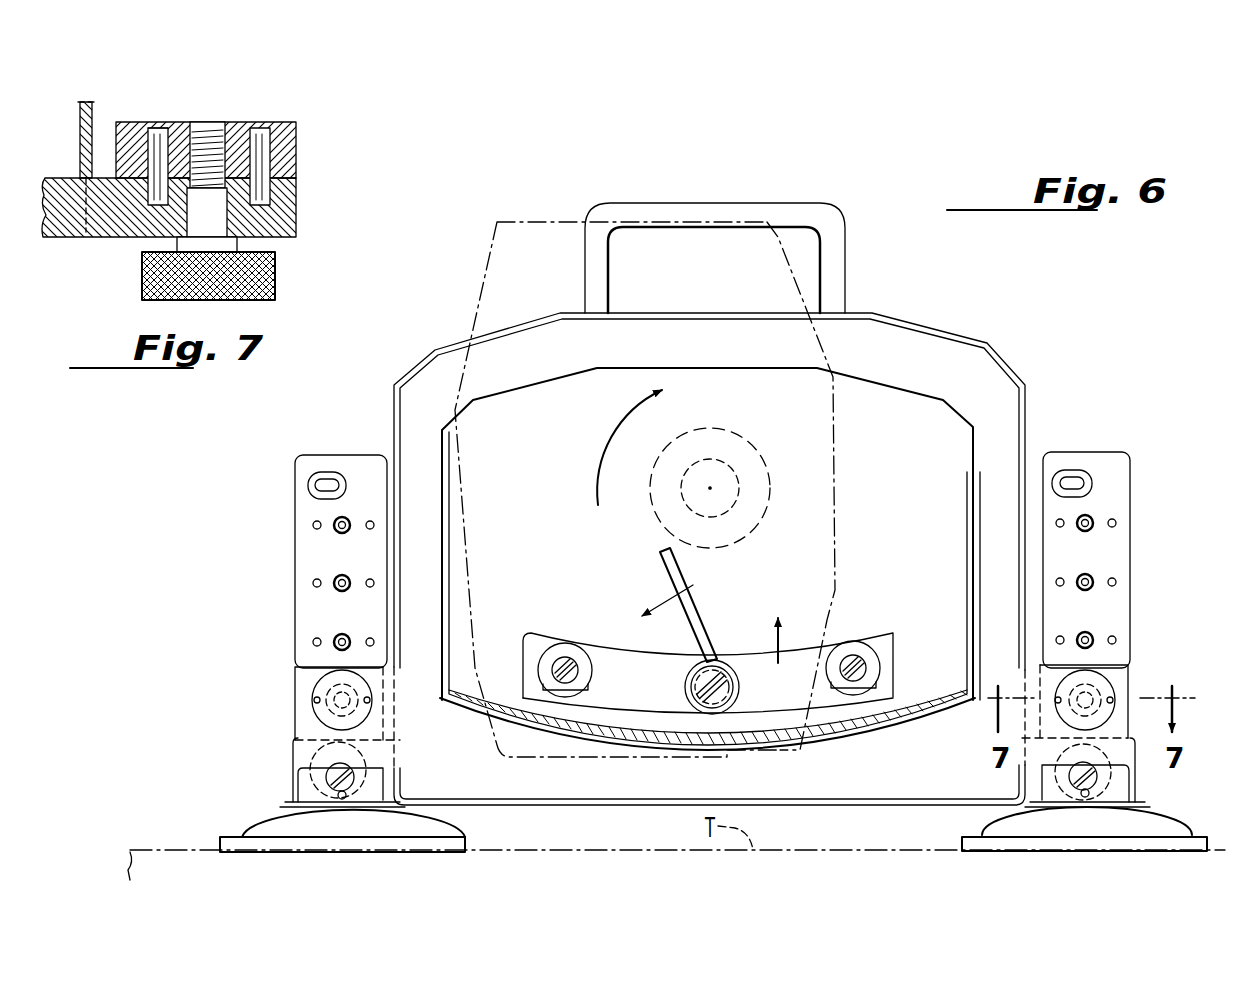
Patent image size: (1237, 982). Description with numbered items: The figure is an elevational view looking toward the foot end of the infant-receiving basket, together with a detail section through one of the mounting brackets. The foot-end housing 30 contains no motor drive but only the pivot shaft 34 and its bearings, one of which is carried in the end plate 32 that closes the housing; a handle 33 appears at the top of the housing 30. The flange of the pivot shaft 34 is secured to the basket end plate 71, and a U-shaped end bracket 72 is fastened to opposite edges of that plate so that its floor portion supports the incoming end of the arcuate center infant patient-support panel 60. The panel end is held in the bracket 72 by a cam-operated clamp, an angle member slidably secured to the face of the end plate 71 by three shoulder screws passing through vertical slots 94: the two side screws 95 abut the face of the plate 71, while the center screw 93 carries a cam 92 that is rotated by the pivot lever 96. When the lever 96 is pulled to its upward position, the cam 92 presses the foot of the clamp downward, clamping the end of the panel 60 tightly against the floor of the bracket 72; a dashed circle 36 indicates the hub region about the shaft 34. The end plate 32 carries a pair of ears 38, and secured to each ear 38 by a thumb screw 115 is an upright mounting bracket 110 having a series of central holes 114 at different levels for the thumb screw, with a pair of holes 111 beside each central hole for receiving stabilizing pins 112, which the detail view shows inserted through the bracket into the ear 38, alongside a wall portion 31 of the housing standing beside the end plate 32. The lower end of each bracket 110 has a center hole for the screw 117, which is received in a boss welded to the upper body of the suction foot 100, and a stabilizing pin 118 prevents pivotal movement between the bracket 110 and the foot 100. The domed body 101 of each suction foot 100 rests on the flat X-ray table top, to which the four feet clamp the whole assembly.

In FIG. 6, the foot-end housing 30 is at (530, 217).
In FIG. 6, the handle 33 is at (830, 235).
In FIG. 6, the basket end plate 71 is at (910, 412).
In FIG. 6, the U-shaped end bracket 72 is at (473, 712).
In FIG. 6, the center infant patient-support panel 60 is at (805, 727).
In FIG. 6, the dial 36 is at (698, 438).
In FIG. 6, the pivot shaft 34 is at (763, 458).
In FIG. 6, the pivot lever 96 is at (668, 570).
In FIG. 6, the side screws 95 is at (552, 652).
In FIG. 6, the center screw 93 is at (713, 665).
In FIG. 6, the cam 92 is at (684, 694).
In FIG. 6, the vertical slots 94 is at (740, 697).
In FIG. 6, the upright mounting bracket 110 is at (308, 507).
In FIG. 7, the upright mounting bracket 110 is at (287, 137).
In FIG. 6, the holes 111 is at (313, 583).
In FIG. 7, the holes 111 is at (258, 125).
In FIG. 6, the central holes 114 is at (338, 635).
In FIG. 6, the ears 38 is at (305, 674).
In FIG. 7, the ears 38 is at (290, 197).
In FIG. 6, the stabilizing pins 112 is at (315, 698).
In FIG. 7, the stabilizing pins 112 is at (152, 130).
In FIG. 6, the thumb screw 115 is at (322, 715).
In FIG. 7, the thumb screw 115 is at (262, 280).
In FIG. 6, the screw 117 is at (327, 778).
In FIG. 6, the stabilizing pin 118 is at (344, 798).
In FIG. 6, the base dome 101 is at (257, 828).
In FIG. 6, the suction feet 100 is at (345, 856).
In FIG. 7, the wall 31 is at (80, 102).
In FIG. 7, the end plate 32 is at (67, 222).